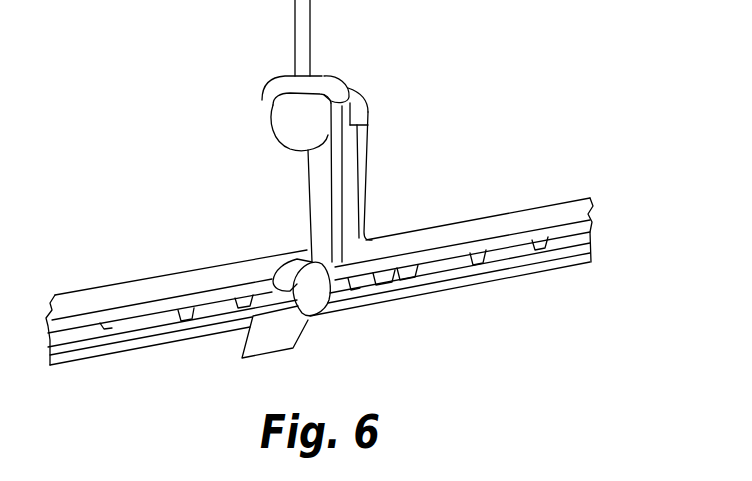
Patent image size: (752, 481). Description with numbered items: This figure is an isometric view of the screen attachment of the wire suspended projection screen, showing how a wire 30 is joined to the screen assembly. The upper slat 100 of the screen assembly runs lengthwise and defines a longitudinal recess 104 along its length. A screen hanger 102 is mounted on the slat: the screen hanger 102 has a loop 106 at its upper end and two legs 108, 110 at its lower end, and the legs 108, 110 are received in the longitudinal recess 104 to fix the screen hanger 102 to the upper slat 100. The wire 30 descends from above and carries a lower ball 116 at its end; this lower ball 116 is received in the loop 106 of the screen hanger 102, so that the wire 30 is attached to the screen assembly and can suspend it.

The wire 30 is at (290, 42).
The upper slat 100 is at (500, 272).
The screen hanger 102 is at (362, 148).
The longitudinal recess 104 is at (590, 248).
The loop 106 is at (332, 100).
The leg 108 is at (418, 272).
The leg 110 is at (158, 321).
The lower ball 116 is at (298, 127).